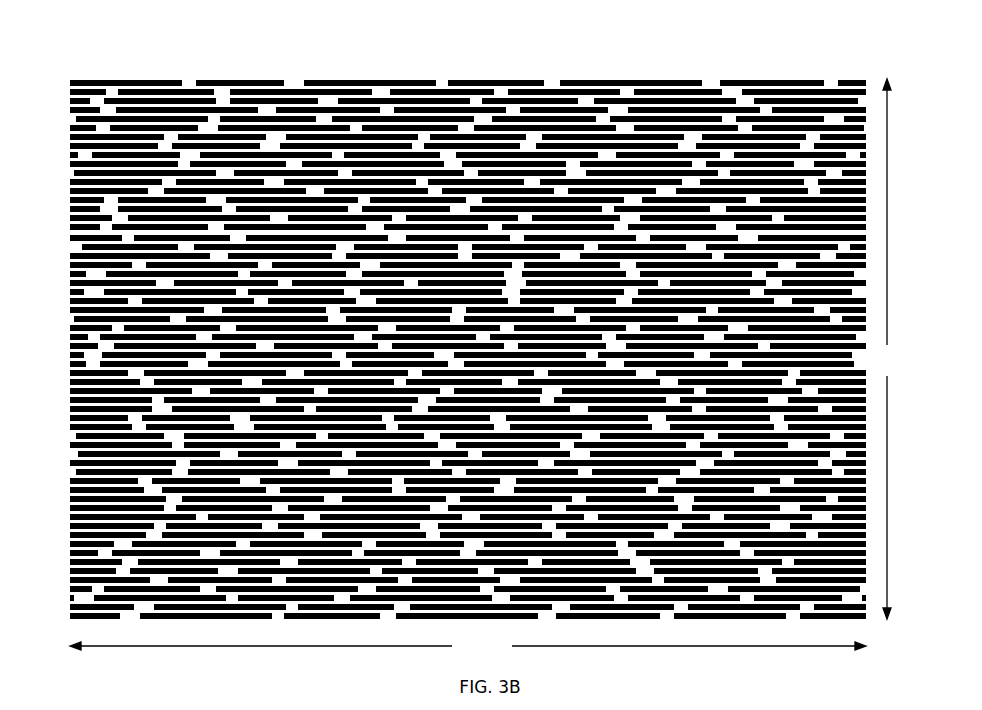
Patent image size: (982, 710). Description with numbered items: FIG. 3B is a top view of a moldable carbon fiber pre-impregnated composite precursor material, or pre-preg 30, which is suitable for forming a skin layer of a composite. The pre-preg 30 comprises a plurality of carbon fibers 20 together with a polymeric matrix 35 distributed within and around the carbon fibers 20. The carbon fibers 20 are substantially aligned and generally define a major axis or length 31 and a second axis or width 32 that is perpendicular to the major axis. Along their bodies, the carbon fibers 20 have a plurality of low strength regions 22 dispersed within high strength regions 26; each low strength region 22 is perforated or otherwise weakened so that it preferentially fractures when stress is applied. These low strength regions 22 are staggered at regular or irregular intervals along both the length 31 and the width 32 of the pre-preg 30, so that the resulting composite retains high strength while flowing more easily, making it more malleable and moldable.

The moldable carbon fiber pre-impregnated composite precursor material 30 is at (115, 54).
The carbon fiber 20 is at (75, 84).
The low strength region 22 is at (377, 92).
The high strength region 26 is at (487, 98).
The polymeric matrix 35 is at (76, 231).
The length 31 is at (468, 648).
The width 32 is at (887, 349).